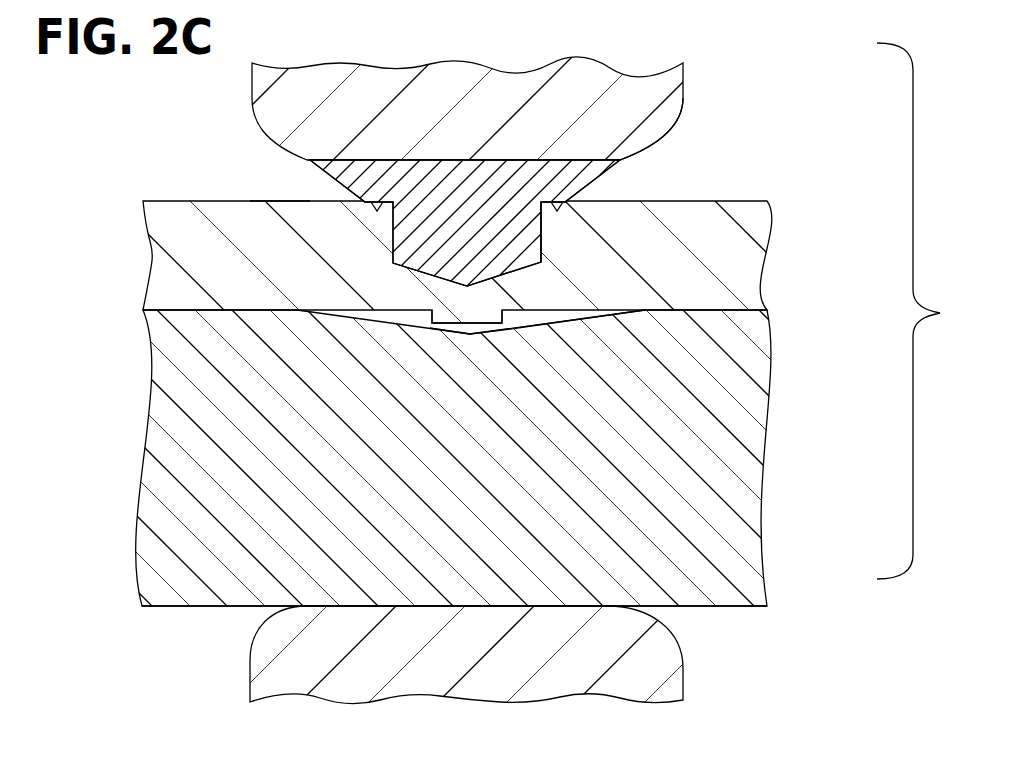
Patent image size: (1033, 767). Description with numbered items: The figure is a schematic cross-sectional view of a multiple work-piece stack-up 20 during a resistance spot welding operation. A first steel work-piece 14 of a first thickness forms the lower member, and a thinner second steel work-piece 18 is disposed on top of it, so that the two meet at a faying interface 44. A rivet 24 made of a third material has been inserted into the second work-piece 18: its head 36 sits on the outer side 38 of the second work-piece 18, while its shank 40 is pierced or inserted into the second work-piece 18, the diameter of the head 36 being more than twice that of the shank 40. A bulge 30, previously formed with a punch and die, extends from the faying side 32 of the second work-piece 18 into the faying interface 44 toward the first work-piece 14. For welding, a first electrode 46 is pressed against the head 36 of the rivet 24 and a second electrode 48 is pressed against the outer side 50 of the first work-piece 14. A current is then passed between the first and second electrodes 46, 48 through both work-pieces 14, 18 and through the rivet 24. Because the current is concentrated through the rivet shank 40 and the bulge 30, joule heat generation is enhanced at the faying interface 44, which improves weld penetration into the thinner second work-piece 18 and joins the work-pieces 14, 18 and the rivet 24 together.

The first steel work-piece 14 is at (755, 385).
The second steel work-piece 18 is at (720, 231).
The stack-up 20 is at (800, 248).
The rivet 24 is at (596, 145).
The bulge 30 is at (483, 322).
The faying side 32 is at (582, 313).
The head 36 is at (376, 186).
The outer side 38 is at (278, 199).
The shank 40 is at (534, 228).
The faying interface 44 is at (552, 316).
The first electrode 46 is at (656, 142).
The second electrode 48 is at (293, 660).
The outer side 50 is at (738, 608).